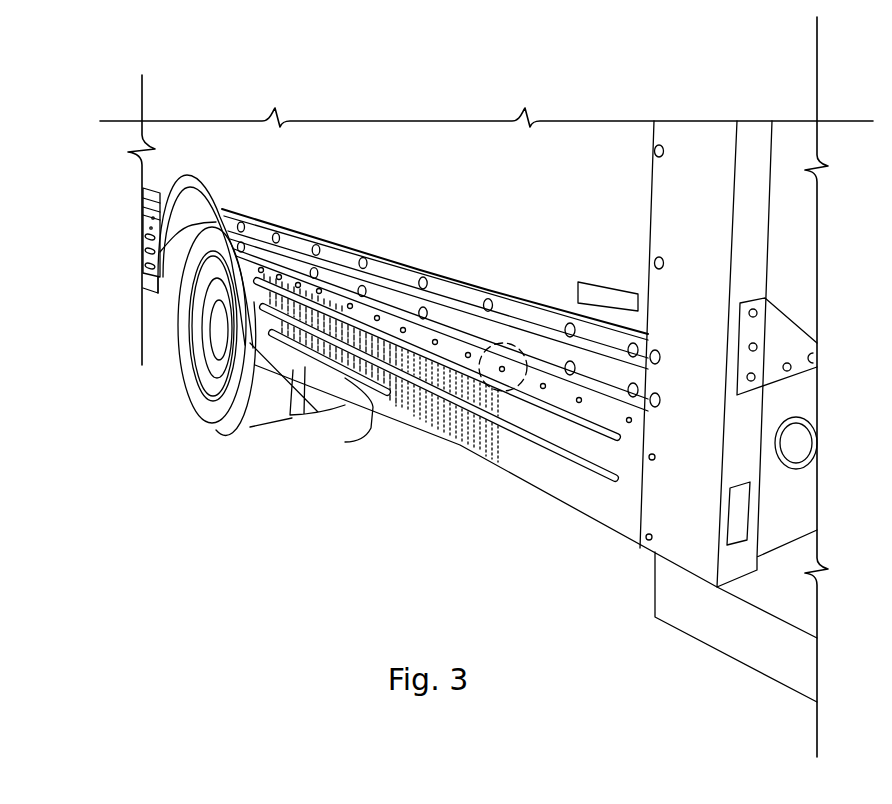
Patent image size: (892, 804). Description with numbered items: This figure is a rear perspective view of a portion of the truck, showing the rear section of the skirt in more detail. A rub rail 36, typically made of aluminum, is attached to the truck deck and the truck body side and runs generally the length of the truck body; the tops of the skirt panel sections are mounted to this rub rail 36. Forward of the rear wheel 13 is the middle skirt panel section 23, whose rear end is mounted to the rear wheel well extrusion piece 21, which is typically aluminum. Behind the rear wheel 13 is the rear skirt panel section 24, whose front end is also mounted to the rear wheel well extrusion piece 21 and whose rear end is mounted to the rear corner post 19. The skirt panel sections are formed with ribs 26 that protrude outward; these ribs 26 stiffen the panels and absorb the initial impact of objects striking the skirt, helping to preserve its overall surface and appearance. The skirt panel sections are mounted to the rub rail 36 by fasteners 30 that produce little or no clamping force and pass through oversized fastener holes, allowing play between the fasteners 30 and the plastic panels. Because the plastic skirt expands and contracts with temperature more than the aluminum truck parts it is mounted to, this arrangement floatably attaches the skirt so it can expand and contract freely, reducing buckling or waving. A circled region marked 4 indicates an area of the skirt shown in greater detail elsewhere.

The detail area (FIG. 4) 4 is at (484, 380).
The rear wheel 13 is at (210, 363).
The rear corner post 19 is at (700, 165).
The rear wheel well extrusion piece 21 is at (172, 292).
The middle skirt panel section 23 is at (147, 246).
The rear skirt panel section 24 is at (623, 513).
The ribs 26 is at (380, 400).
The fasteners 30 is at (500, 375).
The rub rail 36 is at (391, 290).